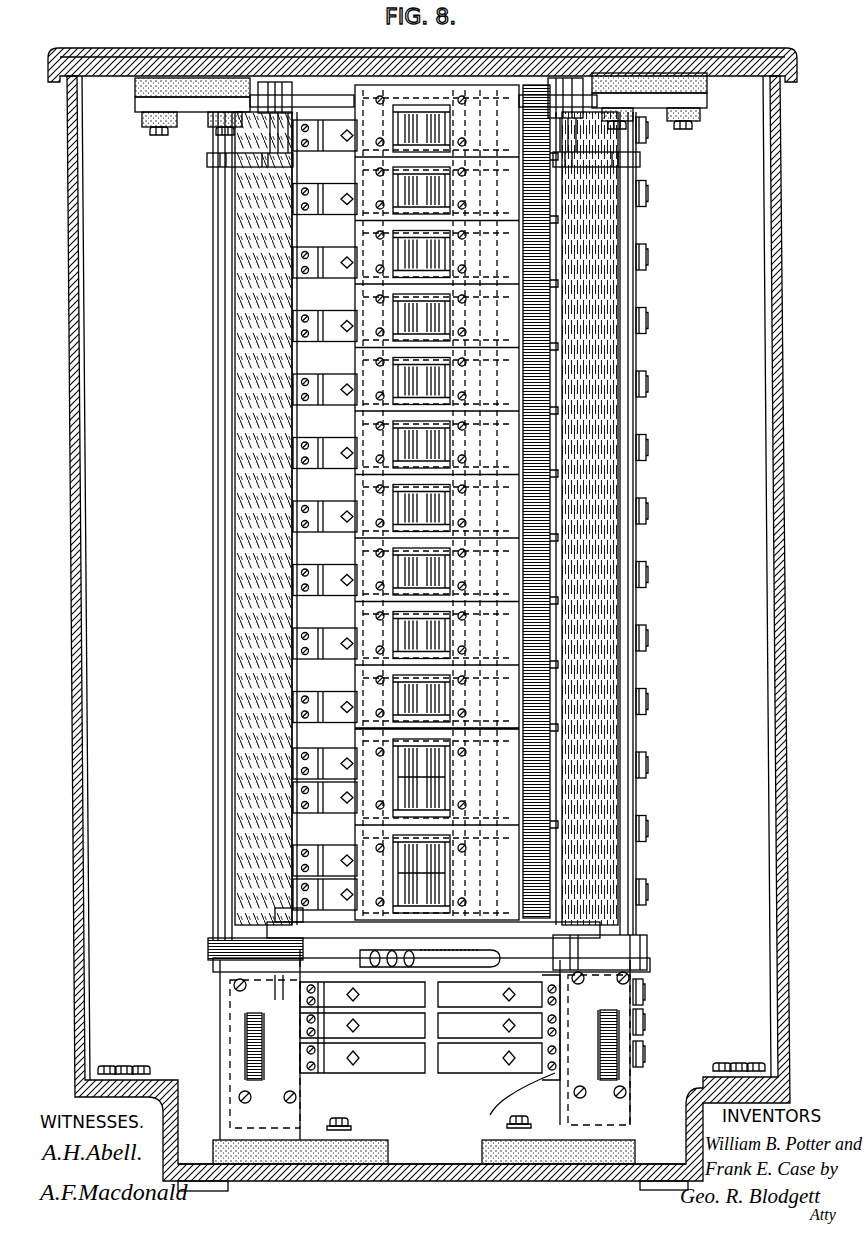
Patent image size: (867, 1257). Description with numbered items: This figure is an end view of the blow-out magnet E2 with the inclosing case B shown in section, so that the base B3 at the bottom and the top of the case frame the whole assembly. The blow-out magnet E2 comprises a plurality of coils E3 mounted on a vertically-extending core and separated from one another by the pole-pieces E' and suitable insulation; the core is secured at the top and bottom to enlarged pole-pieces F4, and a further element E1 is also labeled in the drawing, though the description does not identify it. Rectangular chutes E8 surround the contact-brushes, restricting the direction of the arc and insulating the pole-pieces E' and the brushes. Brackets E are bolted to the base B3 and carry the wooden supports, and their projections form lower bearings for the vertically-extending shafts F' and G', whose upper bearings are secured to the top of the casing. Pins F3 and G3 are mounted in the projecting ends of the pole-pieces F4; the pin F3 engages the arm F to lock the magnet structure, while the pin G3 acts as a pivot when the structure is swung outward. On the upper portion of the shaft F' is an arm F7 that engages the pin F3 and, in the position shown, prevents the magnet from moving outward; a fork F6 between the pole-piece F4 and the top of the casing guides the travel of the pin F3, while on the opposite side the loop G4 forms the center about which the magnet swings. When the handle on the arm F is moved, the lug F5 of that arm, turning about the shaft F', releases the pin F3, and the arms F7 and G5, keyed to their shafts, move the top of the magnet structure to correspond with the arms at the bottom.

The case B is at (83, 623).
The base B3 is at (360, 1178).
The fork F6 is at (298, 90).
The pole-pieces F4 is at (533, 95).
The loop G4 is at (578, 98).
The shaft F' is at (226, 526).
The pin F3 is at (275, 137).
The arm F7 is at (213, 160).
The shaft G' is at (626, 523).
The arm G5 is at (640, 160).
The pin G3 is at (570, 135).
The blow-out magnet E2 is at (505, 447).
The rectangular chutes E8 is at (430, 873).
The panel division bar E1 is at (430, 832).
The coils E3 is at (545, 315).
The arm F is at (400, 960).
The brackets E is at (412, 1062).
The pole-pieces E' is at (432, 990).
The lug F5 is at (236, 986).